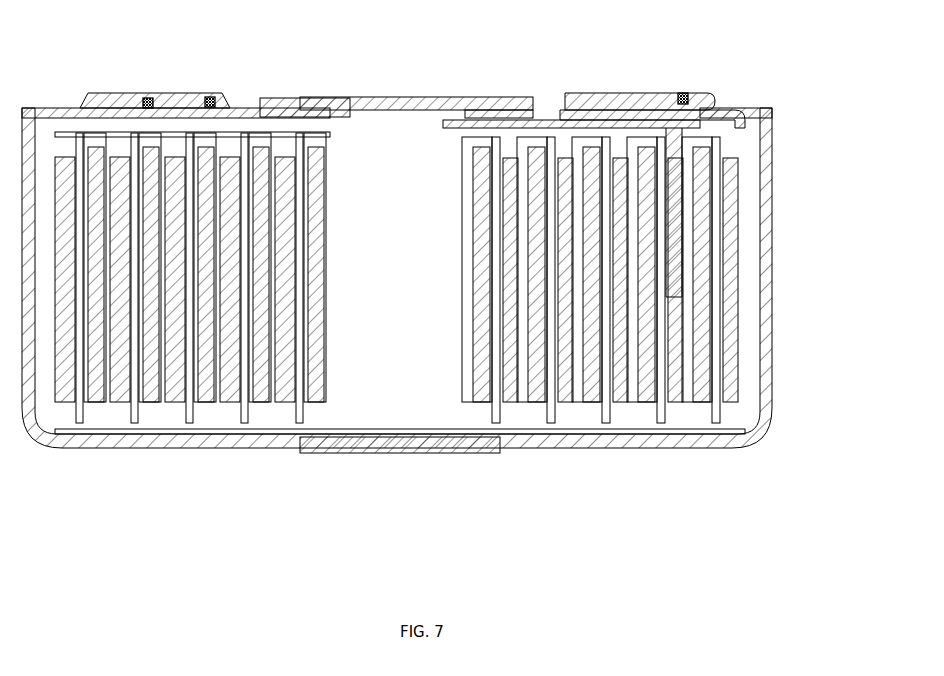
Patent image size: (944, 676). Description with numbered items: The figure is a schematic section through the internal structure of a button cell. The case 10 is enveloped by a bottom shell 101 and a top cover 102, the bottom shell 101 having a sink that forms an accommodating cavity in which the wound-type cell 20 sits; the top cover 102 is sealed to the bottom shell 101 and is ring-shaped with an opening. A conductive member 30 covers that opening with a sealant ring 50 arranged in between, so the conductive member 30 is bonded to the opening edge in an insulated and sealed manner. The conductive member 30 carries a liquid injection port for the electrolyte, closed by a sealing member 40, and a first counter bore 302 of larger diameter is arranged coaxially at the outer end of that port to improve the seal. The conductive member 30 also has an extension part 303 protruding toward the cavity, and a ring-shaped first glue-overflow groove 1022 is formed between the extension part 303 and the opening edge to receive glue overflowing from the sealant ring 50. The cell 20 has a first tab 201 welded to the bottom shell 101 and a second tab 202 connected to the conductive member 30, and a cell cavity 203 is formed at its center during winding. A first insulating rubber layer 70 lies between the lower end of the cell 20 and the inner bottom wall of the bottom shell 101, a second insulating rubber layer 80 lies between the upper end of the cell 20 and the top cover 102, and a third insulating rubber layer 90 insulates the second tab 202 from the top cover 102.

The case 10 is at (450, 274).
The bottom shell 101 is at (772, 162).
The top cover 102 is at (772, 108).
The cell 20 is at (725, 262).
The conductive member 30 is at (645, 93).
The sealing member 40 is at (437, 97).
The sealant ring 50 is at (684, 93).
The first insulating rubber layer 70 is at (578, 450).
The second insulating rubber layer 80 is at (86, 133).
The third insulating rubber layer 90 is at (148, 98).
The first glue-overflow groove 1022 is at (210, 97).
The first tab 201 is at (437, 453).
The second tab 202 is at (522, 118).
The cell cavity 203 is at (368, 225).
The first counter bore 302 is at (557, 120).
The extension part 303 is at (266, 98).